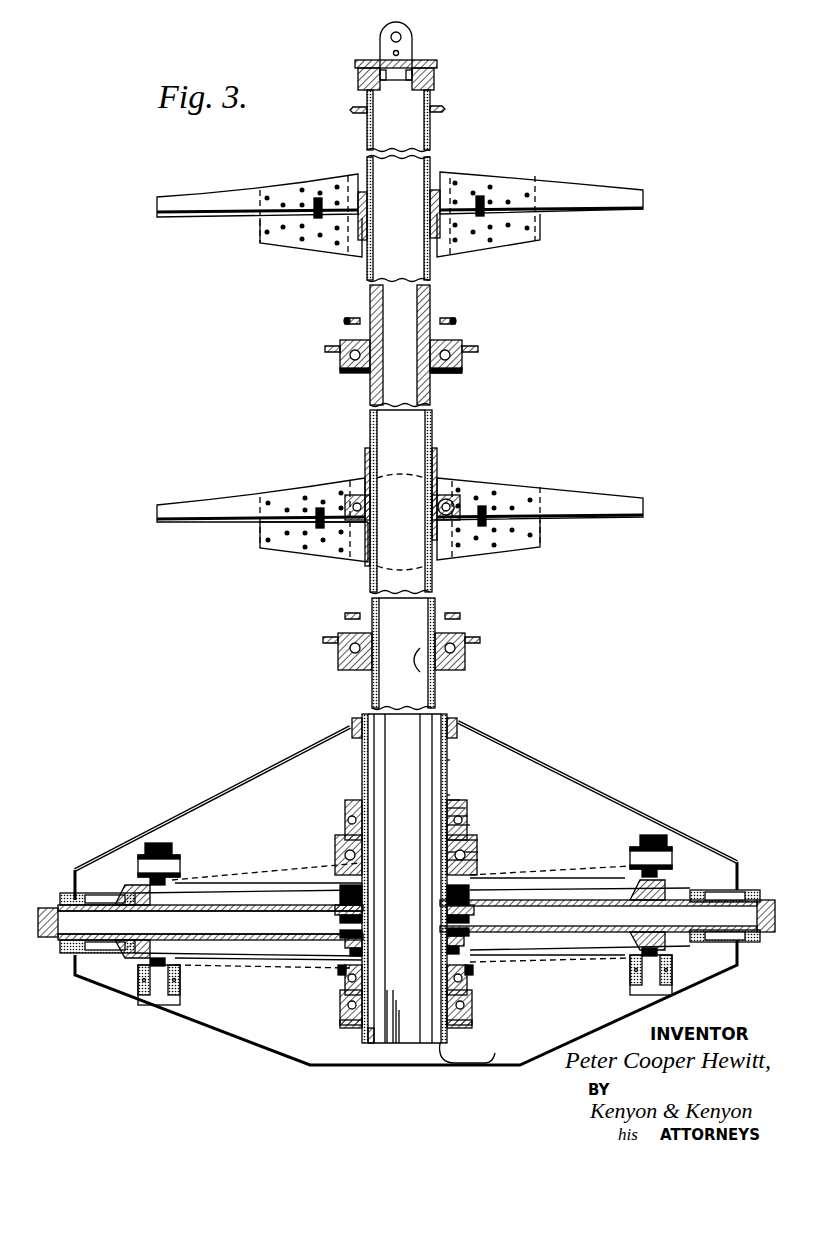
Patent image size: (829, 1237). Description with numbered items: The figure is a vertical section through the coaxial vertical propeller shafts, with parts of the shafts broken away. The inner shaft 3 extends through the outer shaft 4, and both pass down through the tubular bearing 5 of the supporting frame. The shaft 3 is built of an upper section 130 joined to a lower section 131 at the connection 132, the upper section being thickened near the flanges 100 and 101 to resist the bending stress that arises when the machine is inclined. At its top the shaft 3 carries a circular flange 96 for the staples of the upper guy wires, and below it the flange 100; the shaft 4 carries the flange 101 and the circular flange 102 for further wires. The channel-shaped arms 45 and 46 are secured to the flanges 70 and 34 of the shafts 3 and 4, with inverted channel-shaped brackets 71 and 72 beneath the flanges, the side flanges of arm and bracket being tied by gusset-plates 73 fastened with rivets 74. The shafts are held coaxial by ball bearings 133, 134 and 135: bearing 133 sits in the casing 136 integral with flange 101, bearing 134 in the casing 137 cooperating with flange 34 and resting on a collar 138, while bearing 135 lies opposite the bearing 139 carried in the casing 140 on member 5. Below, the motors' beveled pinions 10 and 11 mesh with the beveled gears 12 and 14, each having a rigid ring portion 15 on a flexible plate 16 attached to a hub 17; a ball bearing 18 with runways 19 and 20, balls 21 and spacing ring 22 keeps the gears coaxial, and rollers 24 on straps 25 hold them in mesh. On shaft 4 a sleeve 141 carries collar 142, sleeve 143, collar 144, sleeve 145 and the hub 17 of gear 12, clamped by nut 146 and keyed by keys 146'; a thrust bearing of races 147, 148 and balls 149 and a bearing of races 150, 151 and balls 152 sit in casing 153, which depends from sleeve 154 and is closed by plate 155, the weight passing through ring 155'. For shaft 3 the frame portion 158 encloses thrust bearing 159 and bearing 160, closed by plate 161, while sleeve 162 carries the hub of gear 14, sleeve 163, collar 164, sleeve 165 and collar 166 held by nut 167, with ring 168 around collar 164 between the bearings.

The shaft 3 is at (432, 298).
The shaft 4 is at (435, 604).
The tubular bearing 5 is at (447, 712).
The beveled pinion 10 is at (62, 940).
The beveled pinion 11 is at (680, 890).
The beveled gear 12 is at (160, 895).
The beveled gear 14 is at (190, 945).
The ring portion 15 is at (135, 953).
The flexible plate 16 is at (258, 893).
The hub 17 is at (335, 885).
The ball bearing 18 is at (360, 930).
The runway 19 is at (355, 895).
The runway 20 is at (362, 950).
The balls 21 is at (355, 930).
The ring 22 is at (455, 920).
The rollers 24 is at (158, 843).
The straps 25 is at (150, 1003).
The flange 34 is at (335, 525).
The arm 45 is at (205, 200).
The arm 46 is at (586, 203).
The flange 70 is at (340, 225).
The inverted channel-shaped bracket 71 is at (280, 546).
The inverted channel-shaped bracket 72 is at (285, 240).
The gusset-plates 73 is at (462, 188).
The rivets 74 is at (268, 503).
The circular flange 96 is at (353, 110).
The flange 100 is at (345, 321).
The flange 101 is at (325, 349).
The circular flange 102 is at (345, 616).
The upper section 130 is at (435, 186).
The lower section 131 is at (465, 740).
The connection 132 is at (433, 423).
The ball bearing 133 is at (462, 345).
The ball bearing 134 is at (460, 500).
The ball bearing 135 is at (440, 672).
The casing 136 is at (450, 372).
The casing 137 is at (460, 498).
The collar or sleeve 138 is at (448, 495).
The anti-friction bearing 139 is at (455, 633).
The casing 140 is at (465, 652).
The sleeve 141 is at (450, 760).
The collar 142 is at (450, 795).
The sleeve 143 is at (460, 800).
The second collar 144 is at (478, 852).
The second sleeve 145 is at (478, 860).
The nut 146 is at (491, 907).
The keys 146' is at (308, 909).
The upper ball race 147 is at (465, 808).
The lower ball race 148 is at (470, 825).
The balls 149 is at (468, 816).
The outer ball race 150 is at (340, 855).
The inner ball race 151 is at (352, 820).
The balls 152 is at (345, 838).
The casing 153 is at (352, 800).
The sleeve 154 is at (360, 748).
The plate 155 is at (401, 864).
The ring 155' is at (535, 828).
The portion of supporting frame 158 is at (472, 1008).
The thrust bearing 159 is at (445, 1028).
The bearing 160 is at (470, 985).
The plate 161 is at (460, 968).
The sleeve 162 is at (387, 1010).
The sleeve 163 is at (393, 990).
The collar 164 is at (396, 1000).
The sleeve 165 is at (399, 1010).
The collar 166 is at (472, 1024).
The nut 167 is at (375, 1040).
The ring 168 is at (362, 1005).